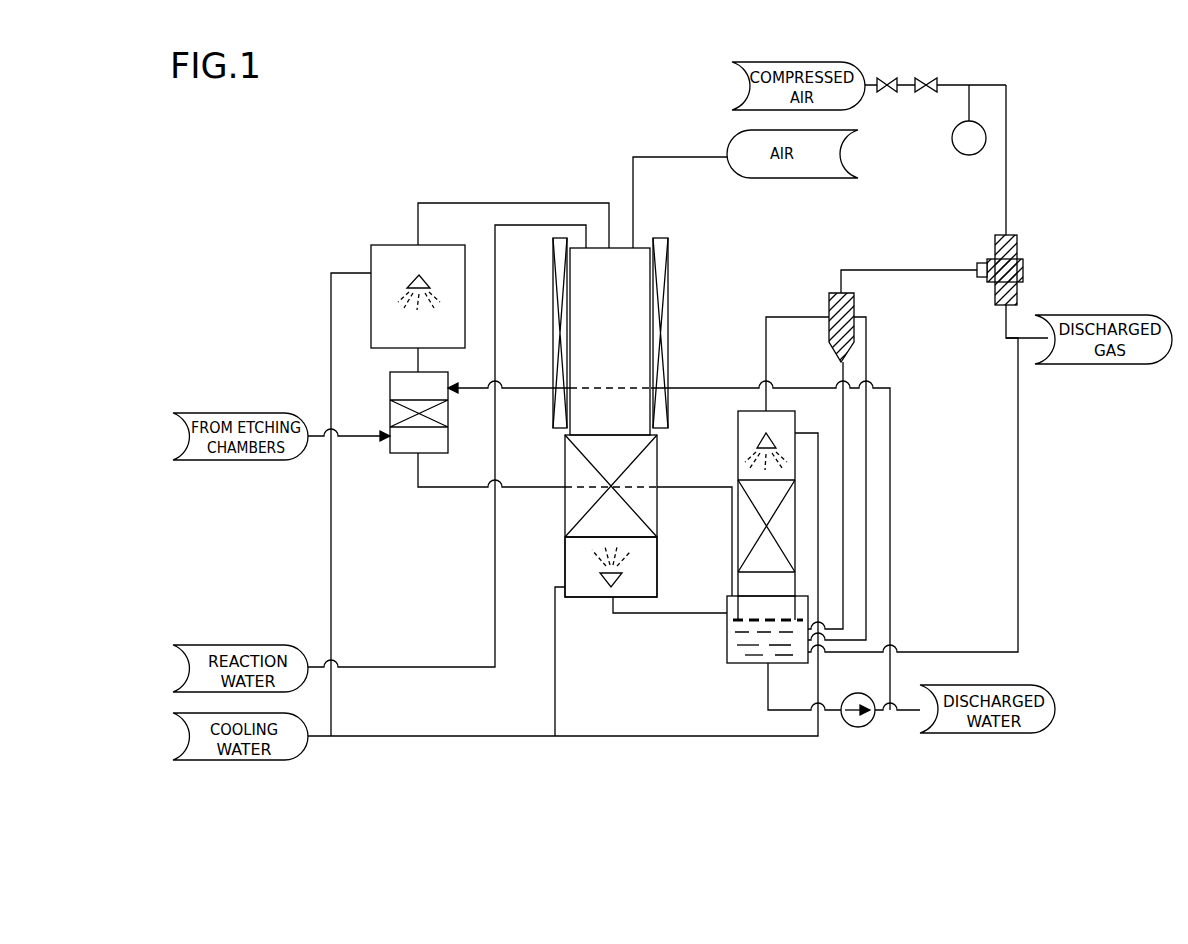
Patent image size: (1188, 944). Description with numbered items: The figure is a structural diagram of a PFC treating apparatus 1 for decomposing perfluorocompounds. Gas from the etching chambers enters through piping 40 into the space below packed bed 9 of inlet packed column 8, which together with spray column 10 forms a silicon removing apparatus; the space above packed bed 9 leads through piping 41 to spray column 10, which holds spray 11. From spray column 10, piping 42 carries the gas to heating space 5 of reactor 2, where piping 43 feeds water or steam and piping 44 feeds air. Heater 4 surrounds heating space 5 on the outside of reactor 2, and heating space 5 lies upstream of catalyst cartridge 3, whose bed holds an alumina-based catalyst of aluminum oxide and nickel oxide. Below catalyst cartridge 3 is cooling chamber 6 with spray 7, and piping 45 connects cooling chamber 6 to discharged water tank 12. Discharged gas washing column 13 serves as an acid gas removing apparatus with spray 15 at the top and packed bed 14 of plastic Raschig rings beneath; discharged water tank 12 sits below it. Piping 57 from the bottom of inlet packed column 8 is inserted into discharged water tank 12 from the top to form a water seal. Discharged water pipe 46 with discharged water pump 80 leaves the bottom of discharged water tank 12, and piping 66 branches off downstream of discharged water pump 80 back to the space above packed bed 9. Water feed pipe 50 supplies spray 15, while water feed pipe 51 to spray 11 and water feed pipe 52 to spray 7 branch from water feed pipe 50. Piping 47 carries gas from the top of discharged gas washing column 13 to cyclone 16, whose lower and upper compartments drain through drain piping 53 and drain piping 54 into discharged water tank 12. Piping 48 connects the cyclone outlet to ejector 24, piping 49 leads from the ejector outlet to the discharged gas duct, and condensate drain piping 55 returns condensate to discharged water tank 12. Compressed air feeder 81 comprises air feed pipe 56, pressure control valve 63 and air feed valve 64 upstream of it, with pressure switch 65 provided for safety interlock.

The PFC treating apparatus 1 is at (601, 112).
The reactor 2 is at (637, 268).
The catalyst cartridge 3 is at (565, 517).
The heater 4 is at (553, 275).
The heating space 5 is at (610, 342).
The cooling chamber 6 is at (565, 570).
The spray 7 is at (622, 580).
The inlet packed column 8 is at (390, 398).
The packed bed 9 is at (443, 415).
The spray column 10 is at (377, 243).
The spray 11 is at (423, 277).
The discharged water tank 12 is at (745, 662).
The discharged gas washing column 13 is at (795, 527).
The packed bed 14 is at (742, 533).
The spray 15 is at (757, 436).
The cyclone 16 is at (829, 297).
The ejector 24 is at (1023, 270).
The piping 40 is at (366, 438).
The piping 41 is at (418, 366).
The piping 42 is at (563, 203).
The piping 43 is at (417, 667).
The piping 44 is at (677, 157).
The piping 45 is at (628, 613).
The discharged water pipe 46 is at (768, 697).
The piping 47 is at (766, 325).
The piping 48 is at (910, 270).
The piping 49 is at (1006, 328).
The water feed pipe 50 is at (598, 733).
The water feed pipe 51 is at (331, 547).
The water feed pipe 52 is at (555, 690).
The drain piping 53 is at (843, 611).
The drain piping 54 is at (866, 468).
The condensate drain piping 55 is at (1018, 478).
The air feed pipe 56 is at (1006, 178).
The piping 57 is at (530, 487).
The pressure control valve 63 is at (926, 78).
The air feed valve 64 is at (887, 78).
The pressure switch 65 is at (952, 138).
The piping 66 is at (528, 388).
The discharged water pump 80 is at (858, 727).
The compressed air feeder 81 is at (958, 85).